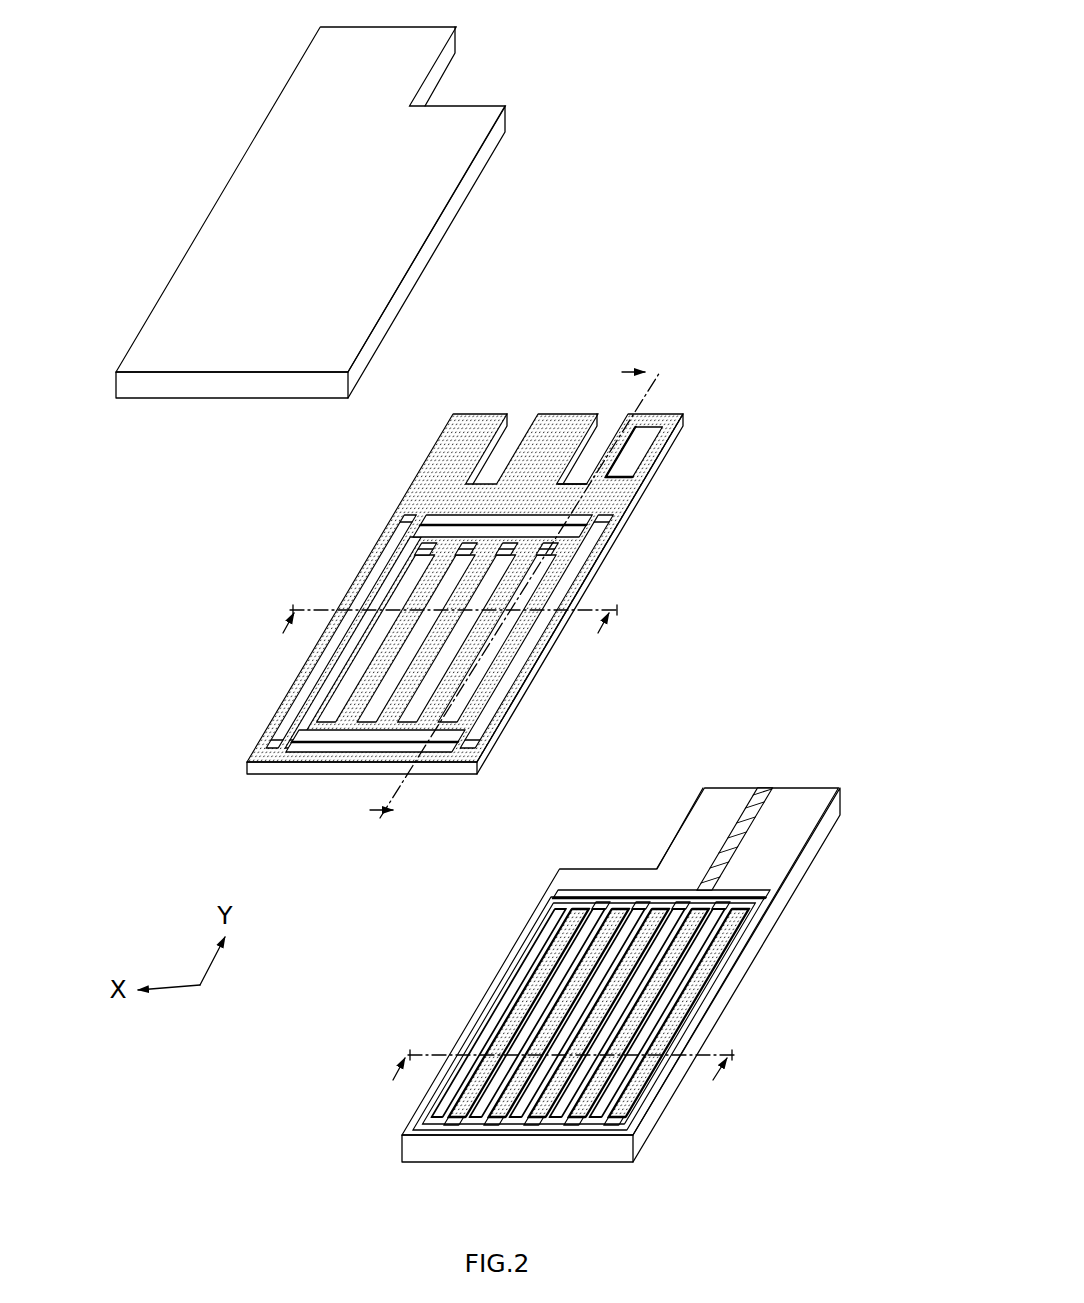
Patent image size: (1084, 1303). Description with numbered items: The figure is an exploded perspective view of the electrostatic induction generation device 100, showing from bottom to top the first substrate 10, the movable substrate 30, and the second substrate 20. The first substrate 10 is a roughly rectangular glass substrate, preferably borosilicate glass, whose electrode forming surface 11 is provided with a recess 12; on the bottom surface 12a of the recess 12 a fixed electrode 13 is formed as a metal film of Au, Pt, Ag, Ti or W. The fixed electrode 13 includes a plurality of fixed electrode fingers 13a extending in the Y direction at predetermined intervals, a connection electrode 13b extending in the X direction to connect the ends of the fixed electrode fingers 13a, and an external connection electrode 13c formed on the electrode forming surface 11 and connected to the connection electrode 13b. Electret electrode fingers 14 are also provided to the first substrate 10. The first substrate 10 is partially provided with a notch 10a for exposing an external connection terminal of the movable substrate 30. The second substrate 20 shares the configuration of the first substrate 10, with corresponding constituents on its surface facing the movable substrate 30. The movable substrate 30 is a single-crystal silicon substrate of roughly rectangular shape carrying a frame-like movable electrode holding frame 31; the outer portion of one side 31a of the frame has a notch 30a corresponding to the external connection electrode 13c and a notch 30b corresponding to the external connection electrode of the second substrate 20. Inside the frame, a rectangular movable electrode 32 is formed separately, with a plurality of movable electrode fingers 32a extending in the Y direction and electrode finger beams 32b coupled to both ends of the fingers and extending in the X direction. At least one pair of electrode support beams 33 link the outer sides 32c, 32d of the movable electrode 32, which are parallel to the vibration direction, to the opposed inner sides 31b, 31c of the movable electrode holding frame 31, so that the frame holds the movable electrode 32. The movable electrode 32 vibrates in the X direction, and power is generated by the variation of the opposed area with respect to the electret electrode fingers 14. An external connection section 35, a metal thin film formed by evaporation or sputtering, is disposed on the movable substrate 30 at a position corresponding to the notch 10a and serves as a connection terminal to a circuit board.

The electrostatic induction generation device 100 is at (670, 136).
The second substrate 20 is at (500, 117).
The movable substrate 30 is at (757, 352).
The movable electrode holding frame 31 is at (550, 503).
The one side of the movable electrode holding frame 31a is at (560, 407).
The inner side of the movable electrode holding frame 31b is at (480, 518).
The inner side of the movable electrode holding frame 31c is at (347, 749).
The notch 30a is at (607, 431).
The notch 30b is at (500, 430).
The movable electrode 32 is at (398, 602).
The movable electrode fingers 32a is at (520, 575).
The electrode finger beams 32b is at (205, 650).
The outer side of the movable electrode 32c is at (507, 515).
The outer side of the movable electrode 32d is at (443, 745).
The electrode support beams 33 is at (418, 515).
The external connection section 35 is at (650, 447).
The first substrate 10 is at (836, 803).
The notch 10a is at (680, 820).
The electrode forming surface 11 is at (408, 1133).
The recess 12 is at (583, 895).
The bottom surface of the recess 12a is at (547, 977).
The fixed electrode 13 is at (651, 1004).
The fixed electrode fingers 13a is at (700, 937).
The connection electrode 13b is at (723, 893).
The external connection electrode 13c is at (727, 852).
The electret electrode fingers 14 is at (520, 1118).